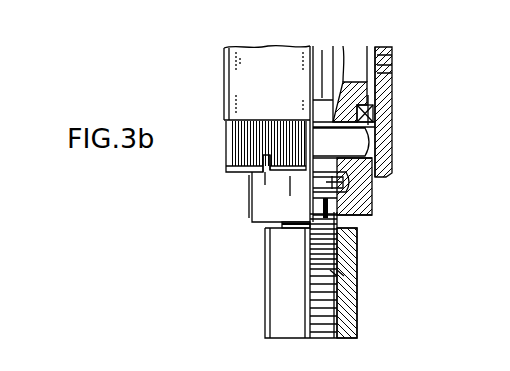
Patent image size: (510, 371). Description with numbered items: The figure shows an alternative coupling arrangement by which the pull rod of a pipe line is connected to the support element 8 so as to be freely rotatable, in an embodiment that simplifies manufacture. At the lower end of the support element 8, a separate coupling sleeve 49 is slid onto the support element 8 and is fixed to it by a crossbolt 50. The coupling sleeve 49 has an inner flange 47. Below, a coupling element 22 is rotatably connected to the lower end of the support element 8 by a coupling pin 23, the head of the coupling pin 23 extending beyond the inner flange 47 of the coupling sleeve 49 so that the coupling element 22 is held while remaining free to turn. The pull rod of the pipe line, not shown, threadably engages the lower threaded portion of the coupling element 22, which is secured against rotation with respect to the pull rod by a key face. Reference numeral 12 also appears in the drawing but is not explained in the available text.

The support element 8 is at (350, 88).
The flange 12 is at (382, 123).
The crossbolt 50 is at (370, 155).
The coupling sleeve 49 is at (352, 185).
The inner flange 47 is at (347, 211).
The coupling pin 23 is at (296, 223).
The coupling element 22 is at (357, 282).